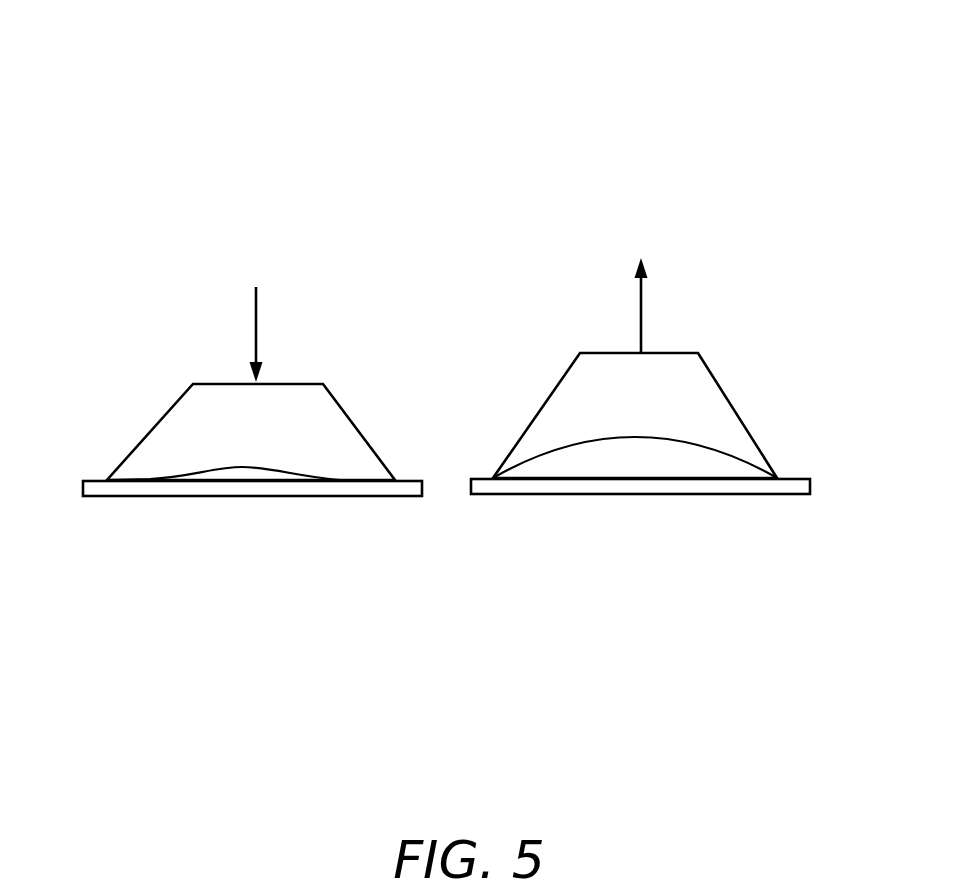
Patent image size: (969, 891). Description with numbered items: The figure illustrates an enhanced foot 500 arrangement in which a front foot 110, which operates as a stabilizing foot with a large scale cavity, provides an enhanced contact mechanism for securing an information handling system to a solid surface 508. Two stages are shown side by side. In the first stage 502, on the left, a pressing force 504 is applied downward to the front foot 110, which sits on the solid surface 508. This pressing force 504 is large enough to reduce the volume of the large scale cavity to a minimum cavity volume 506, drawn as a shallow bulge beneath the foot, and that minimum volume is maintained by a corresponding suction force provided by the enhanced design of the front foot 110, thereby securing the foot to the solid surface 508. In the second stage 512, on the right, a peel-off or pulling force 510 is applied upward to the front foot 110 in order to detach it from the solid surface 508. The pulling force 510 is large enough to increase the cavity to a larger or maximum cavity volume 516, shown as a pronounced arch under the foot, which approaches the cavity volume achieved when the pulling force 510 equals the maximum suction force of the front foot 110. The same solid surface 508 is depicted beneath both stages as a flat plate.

The peel-off process 500 is at (262, 68).
The front foot 110 is at (801, 414).
The stage 1 502 is at (237, 269).
The pressing force F1 504 is at (183, 351).
The minimum cavity volume Vmin 506 is at (236, 482).
The solid surface 508 is at (482, 503).
The pulling force F 510 is at (626, 336).
The stage 2 512 is at (623, 254).
The maximum cavity volume V0 516 is at (626, 459).